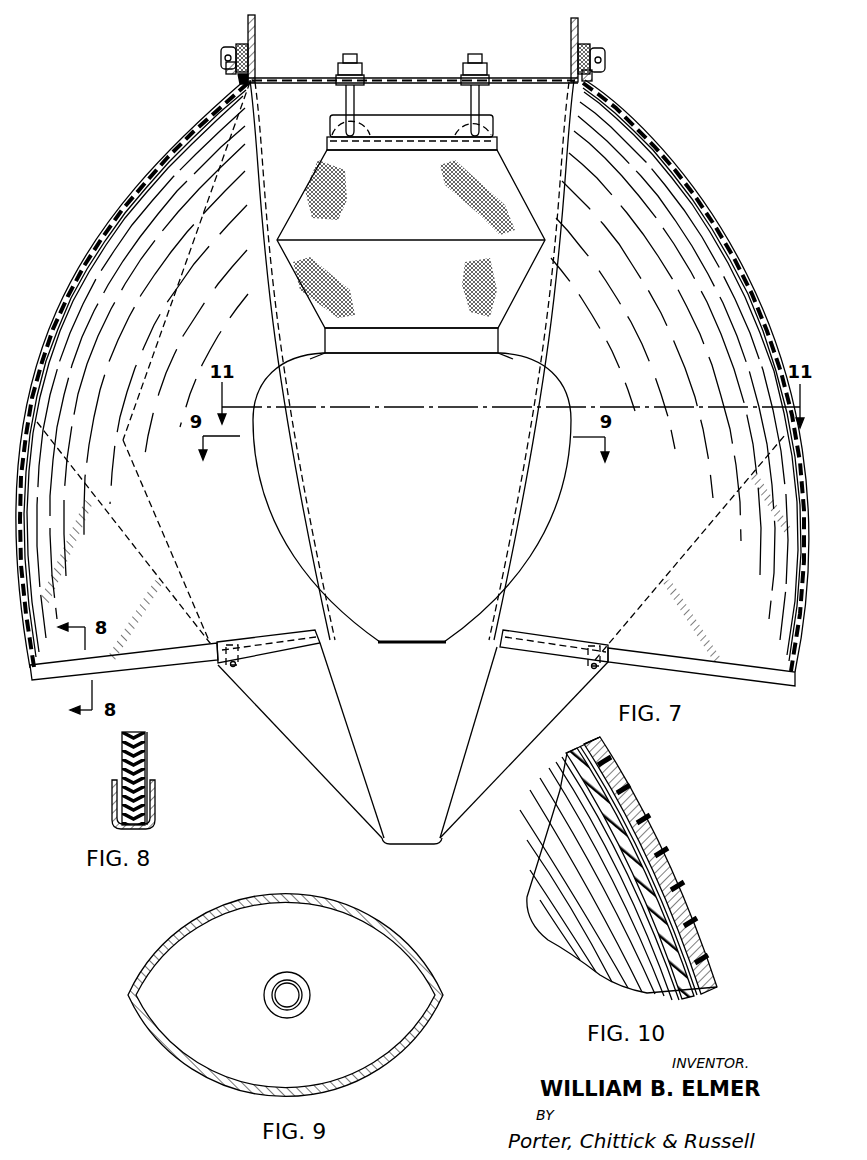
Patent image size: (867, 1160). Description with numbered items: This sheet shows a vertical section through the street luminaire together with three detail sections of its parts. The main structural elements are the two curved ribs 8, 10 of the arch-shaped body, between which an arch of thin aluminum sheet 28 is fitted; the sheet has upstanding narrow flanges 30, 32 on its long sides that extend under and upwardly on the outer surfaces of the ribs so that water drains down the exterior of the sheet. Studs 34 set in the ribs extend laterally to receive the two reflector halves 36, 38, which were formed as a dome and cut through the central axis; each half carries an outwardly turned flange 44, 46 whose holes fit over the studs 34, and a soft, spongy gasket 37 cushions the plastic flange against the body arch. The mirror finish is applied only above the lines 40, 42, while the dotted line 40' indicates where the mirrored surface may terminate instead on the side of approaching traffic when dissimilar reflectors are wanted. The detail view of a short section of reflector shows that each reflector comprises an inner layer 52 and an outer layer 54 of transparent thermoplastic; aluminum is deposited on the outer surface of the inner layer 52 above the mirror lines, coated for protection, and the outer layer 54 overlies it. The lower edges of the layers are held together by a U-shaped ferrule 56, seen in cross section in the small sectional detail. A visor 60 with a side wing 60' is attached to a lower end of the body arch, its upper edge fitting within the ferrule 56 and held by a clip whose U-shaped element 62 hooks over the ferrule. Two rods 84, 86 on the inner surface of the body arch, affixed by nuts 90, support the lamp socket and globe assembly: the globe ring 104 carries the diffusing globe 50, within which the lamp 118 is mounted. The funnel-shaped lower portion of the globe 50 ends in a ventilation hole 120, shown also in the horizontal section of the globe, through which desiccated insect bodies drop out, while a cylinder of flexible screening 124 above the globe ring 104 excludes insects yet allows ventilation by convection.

In FIG. 7, the curved rib 8 is at (248, 28).
In FIG. 7, the curved rib 10 is at (578, 30).
In FIG. 7, the arch sheet 28 is at (378, 78).
In FIG. 7, the upstanding flange 30 is at (240, 80).
In FIG. 7, the upstanding flange 32 is at (592, 75).
In FIG. 7, the stud 34 is at (226, 68).
In FIG. 7, the reflector half 36 is at (735, 256).
In FIG. 7, the gasket 37 is at (250, 60).
In FIG. 7, the reflector half 38 is at (120, 200).
In FIG. 7, the mirror boundary line 40 is at (123, 541).
In FIG. 7, the alternate mirror boundary line 40' is at (186, 261).
In FIG. 7, the mirror boundary line 42 is at (682, 556).
In FIG. 7, the outwardly turned flange 44 is at (604, 54).
In FIG. 7, the outwardly turned flange 46 is at (221, 56).
In FIG. 7, the globe 50 is at (540, 553).
In FIG. 9, the globe 50 is at (378, 1070).
In FIG. 7, the inner layer 52 is at (188, 132).
In FIG. 8, the inner layer 52 is at (122, 754).
In FIG. 10, the inner layer 52 is at (648, 940).
In FIG. 7, the outer layer 54 is at (162, 156).
In FIG. 8, the outer layer 54 is at (147, 764).
In FIG. 10, the outer layer 54 is at (690, 896).
In FIG. 7, the U-shaped ferrule 56 is at (32, 682).
In FIG. 8, the U-shaped ferrule 56 is at (112, 799).
In FIG. 7, the visor 60 is at (357, 760).
In FIG. 7, the visor side wing 60' is at (524, 750).
In FIG. 7, the U-shaped clip element 62 is at (226, 668).
In FIG. 7, the rod 84 is at (346, 101).
In FIG. 7, the rod 86 is at (479, 106).
In FIG. 7, the nut 90 is at (345, 66).
In FIG. 7, the globe ring 104 is at (500, 343).
In FIG. 9, the lamp 118 is at (300, 1004).
In FIG. 7, the ventilation hole 120 is at (402, 645).
In FIG. 9, the ventilation hole 120 is at (310, 987).
In FIG. 7, the flexible screening 124 is at (503, 182).